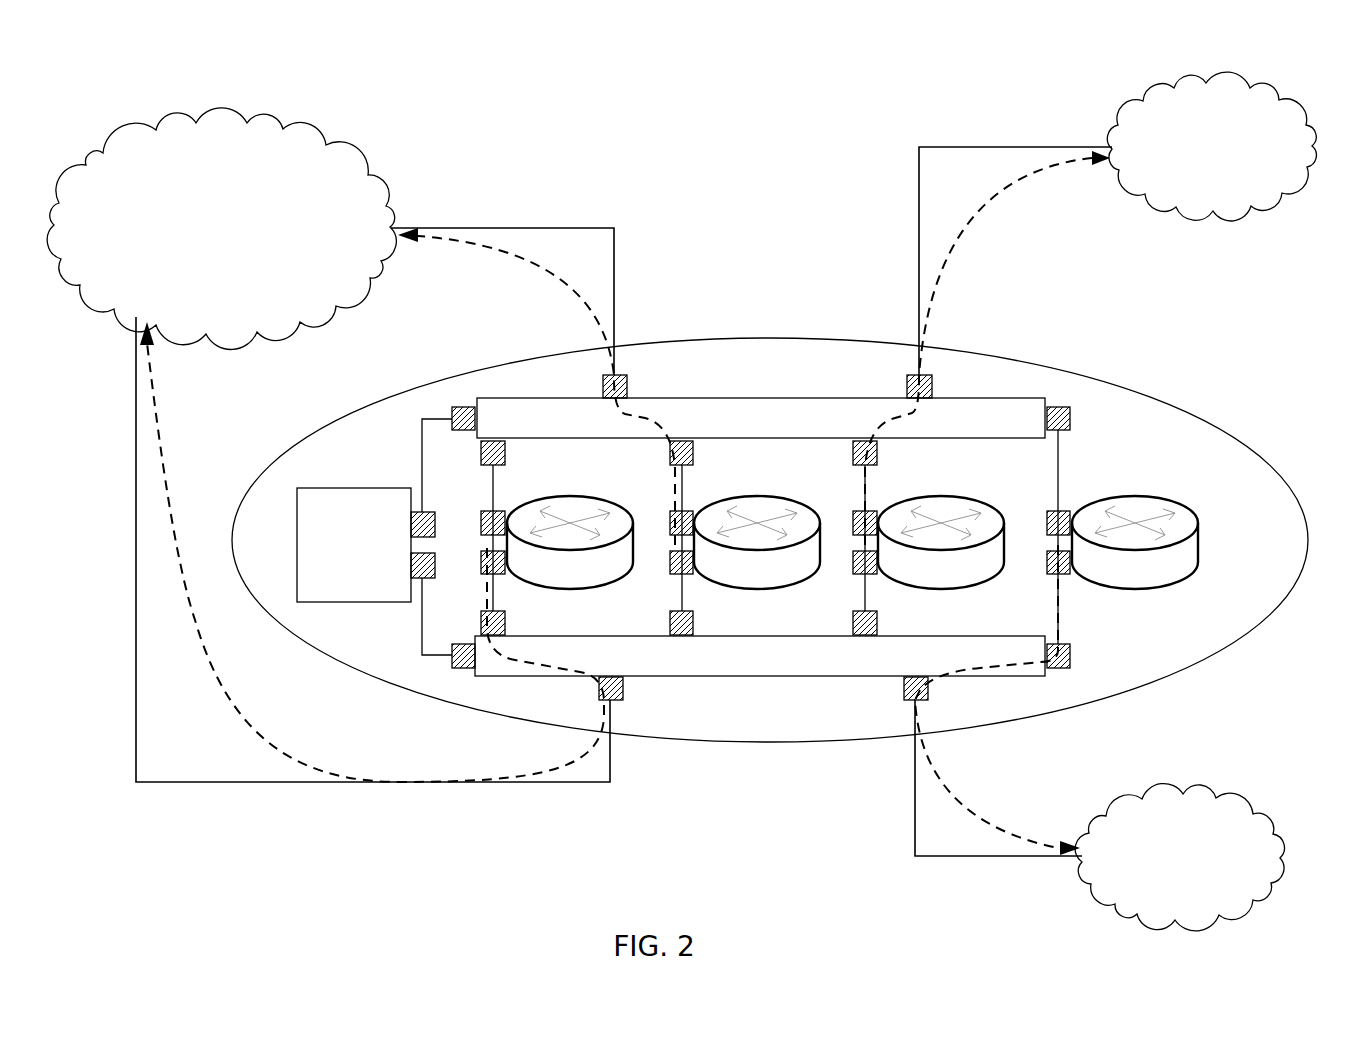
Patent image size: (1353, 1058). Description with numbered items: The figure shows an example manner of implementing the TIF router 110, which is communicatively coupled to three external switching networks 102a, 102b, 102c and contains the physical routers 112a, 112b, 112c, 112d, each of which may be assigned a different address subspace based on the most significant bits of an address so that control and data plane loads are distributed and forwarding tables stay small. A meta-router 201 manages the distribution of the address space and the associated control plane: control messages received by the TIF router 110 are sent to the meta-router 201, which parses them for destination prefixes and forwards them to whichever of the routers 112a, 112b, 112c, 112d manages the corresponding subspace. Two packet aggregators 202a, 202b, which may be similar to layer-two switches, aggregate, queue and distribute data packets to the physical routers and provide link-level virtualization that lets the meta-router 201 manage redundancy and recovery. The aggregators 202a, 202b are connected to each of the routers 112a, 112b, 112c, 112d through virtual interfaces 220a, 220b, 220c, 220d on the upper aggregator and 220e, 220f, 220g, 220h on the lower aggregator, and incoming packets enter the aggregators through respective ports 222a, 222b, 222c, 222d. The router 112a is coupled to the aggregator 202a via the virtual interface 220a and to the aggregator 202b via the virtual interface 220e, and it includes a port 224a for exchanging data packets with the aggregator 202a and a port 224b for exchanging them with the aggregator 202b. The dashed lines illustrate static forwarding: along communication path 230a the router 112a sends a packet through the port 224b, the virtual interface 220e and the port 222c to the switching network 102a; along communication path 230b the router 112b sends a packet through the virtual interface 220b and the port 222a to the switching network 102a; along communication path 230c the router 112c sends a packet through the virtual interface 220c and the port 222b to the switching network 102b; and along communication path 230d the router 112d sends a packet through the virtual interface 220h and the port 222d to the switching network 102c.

The TIF router 110 is at (718, 337).
The switching network 102a is at (300, 127).
The switching network 102b is at (1257, 87).
The switching network 102c is at (1227, 795).
The meta-router 201 is at (313, 488).
The packet aggregator 202a is at (737, 398).
The packet aggregator 202b is at (730, 677).
The physical router 112a is at (562, 497).
The physical router 112b is at (750, 497).
The physical router 112c is at (937, 497).
The physical router 112d is at (1130, 497).
The virtual interface 220a is at (505, 455).
The virtual interface 220b is at (693, 455).
The virtual interface 220c is at (877, 455).
The virtual interface 220d is at (1058, 407).
The virtual interface 220e is at (505, 623).
The virtual interface 220f is at (693, 623).
The virtual interface 220g is at (877, 623).
The virtual interface 220h is at (1070, 656).
The port 222a is at (627, 385).
The port 222b is at (932, 385).
The port 222c is at (623, 697).
The port 222d is at (903, 700).
The port 224a is at (452, 407).
The port 224b is at (452, 668).
The communication path 230a is at (490, 765).
The communication path 230b is at (560, 283).
The communication path 230c is at (977, 227).
The communication path 230d is at (957, 792).